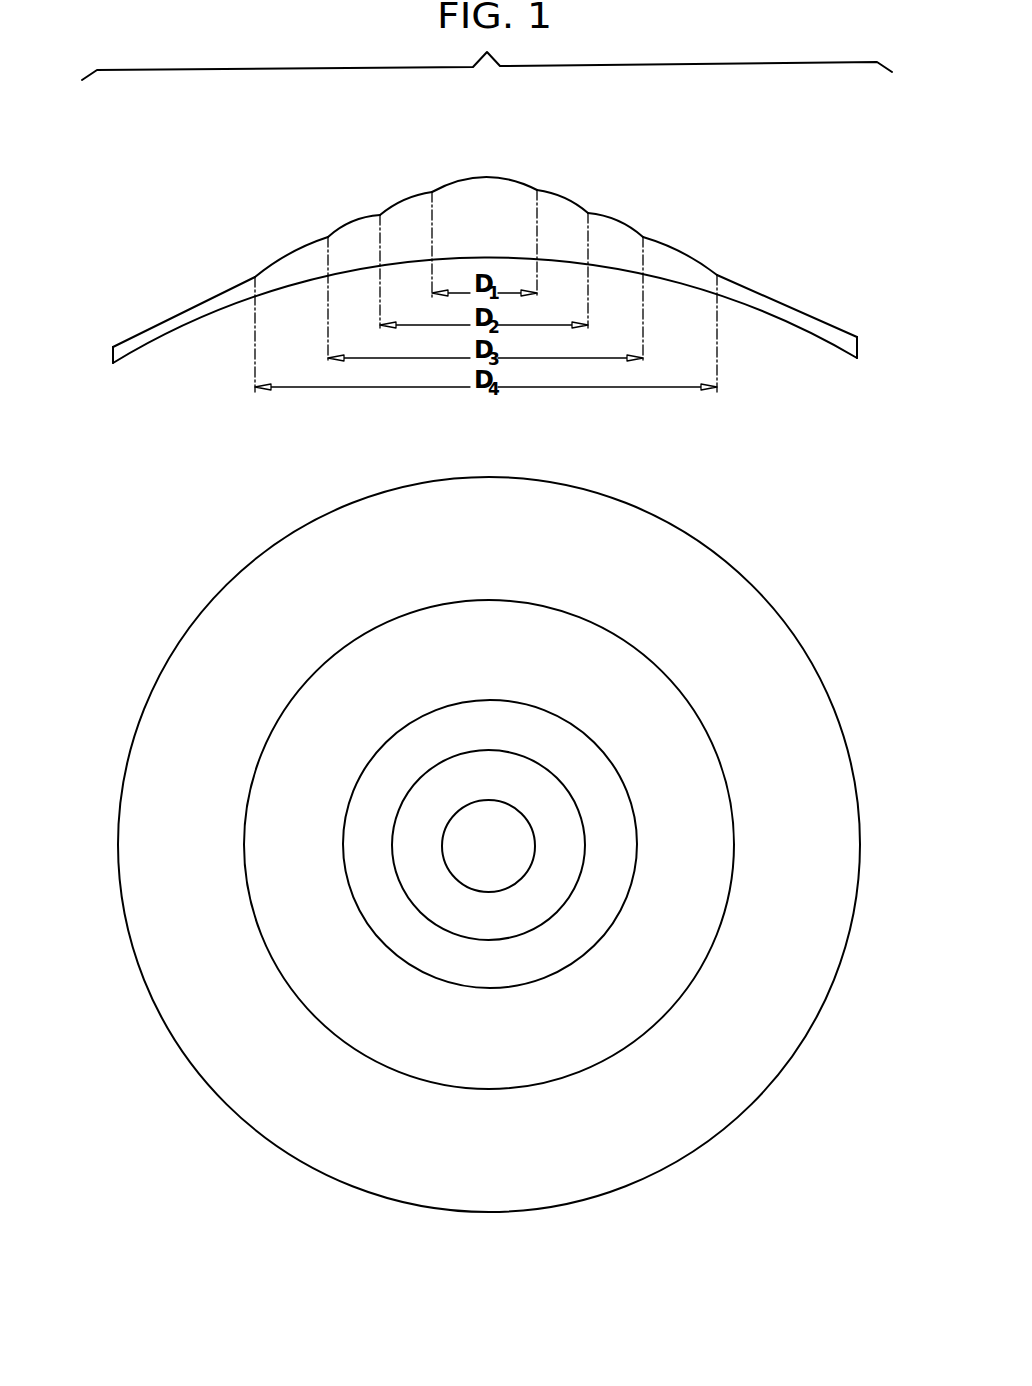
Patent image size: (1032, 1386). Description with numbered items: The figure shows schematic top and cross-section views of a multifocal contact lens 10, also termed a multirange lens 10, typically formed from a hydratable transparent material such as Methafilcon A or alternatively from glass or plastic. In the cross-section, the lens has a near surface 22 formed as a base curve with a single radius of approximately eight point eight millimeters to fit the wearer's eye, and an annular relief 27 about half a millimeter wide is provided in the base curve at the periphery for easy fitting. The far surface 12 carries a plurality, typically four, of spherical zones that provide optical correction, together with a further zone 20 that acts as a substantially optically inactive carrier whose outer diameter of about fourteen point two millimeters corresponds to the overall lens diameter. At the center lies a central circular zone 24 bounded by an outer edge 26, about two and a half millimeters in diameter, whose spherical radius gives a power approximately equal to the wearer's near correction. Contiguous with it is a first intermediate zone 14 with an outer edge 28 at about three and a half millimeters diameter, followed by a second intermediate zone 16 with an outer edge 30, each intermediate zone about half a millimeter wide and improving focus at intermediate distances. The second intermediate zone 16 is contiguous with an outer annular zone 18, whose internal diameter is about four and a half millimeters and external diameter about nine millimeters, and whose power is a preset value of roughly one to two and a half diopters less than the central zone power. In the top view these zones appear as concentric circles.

The multifocal contact lens 10 is at (237, 1153).
The far surface 12 is at (160, 298).
The first intermediate zone 14 is at (565, 192).
The second intermediate zone 16 is at (618, 220).
The outer annular zone 18 is at (680, 250).
The carrier zone 20 is at (788, 302).
The near surface 22 is at (225, 307).
The central circular zone 24 is at (500, 180).
The outer edge of central zone 26 is at (432, 192).
The annular relief 27 is at (132, 353).
The outer edge of first intermediate zone 28 is at (380, 215).
The outer edge of second intermediate zone 30 is at (328, 237).